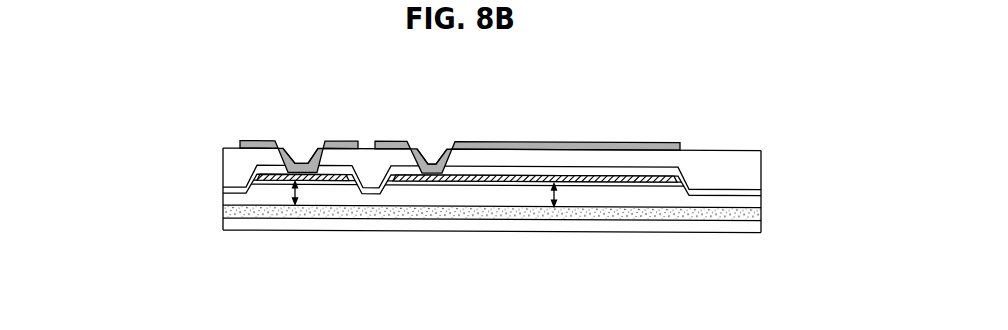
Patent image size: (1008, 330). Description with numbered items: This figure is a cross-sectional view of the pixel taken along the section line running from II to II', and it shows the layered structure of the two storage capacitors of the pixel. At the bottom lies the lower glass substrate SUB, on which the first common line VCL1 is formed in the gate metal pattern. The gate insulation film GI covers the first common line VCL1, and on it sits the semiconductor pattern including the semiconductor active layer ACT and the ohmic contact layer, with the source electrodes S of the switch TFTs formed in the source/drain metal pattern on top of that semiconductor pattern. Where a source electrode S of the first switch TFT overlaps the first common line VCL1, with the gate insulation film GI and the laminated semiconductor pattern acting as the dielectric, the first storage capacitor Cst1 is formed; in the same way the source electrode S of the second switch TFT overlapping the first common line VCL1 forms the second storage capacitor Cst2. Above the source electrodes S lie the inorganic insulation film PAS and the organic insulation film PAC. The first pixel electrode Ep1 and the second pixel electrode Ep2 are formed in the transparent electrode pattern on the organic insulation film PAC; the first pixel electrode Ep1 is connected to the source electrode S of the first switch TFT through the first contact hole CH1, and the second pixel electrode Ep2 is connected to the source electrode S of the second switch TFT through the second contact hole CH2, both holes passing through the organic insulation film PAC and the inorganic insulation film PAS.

The first pixel electrode Ep1 is at (240, 141).
The second pixel electrode Ep2 is at (681, 144).
The first contact hole CH1 is at (300, 148).
The second contact hole CH2 is at (431, 148).
The organic insulation film PAC is at (228, 160).
The inorganic insulation film PAS is at (232, 188).
The gate insulation film GI is at (232, 195).
The first common line VCL1 is at (230, 210).
The lower glass substrate SUB is at (223, 225).
The source electrode S is at (271, 177).
The semiconductor active layer ACT is at (442, 189).
The first storage capacitor Cst1 is at (314, 192).
The second storage capacitor Cst2 is at (575, 195).
The section line II-II' II is at (221, 245).
The section line II- II' is at (759, 250).